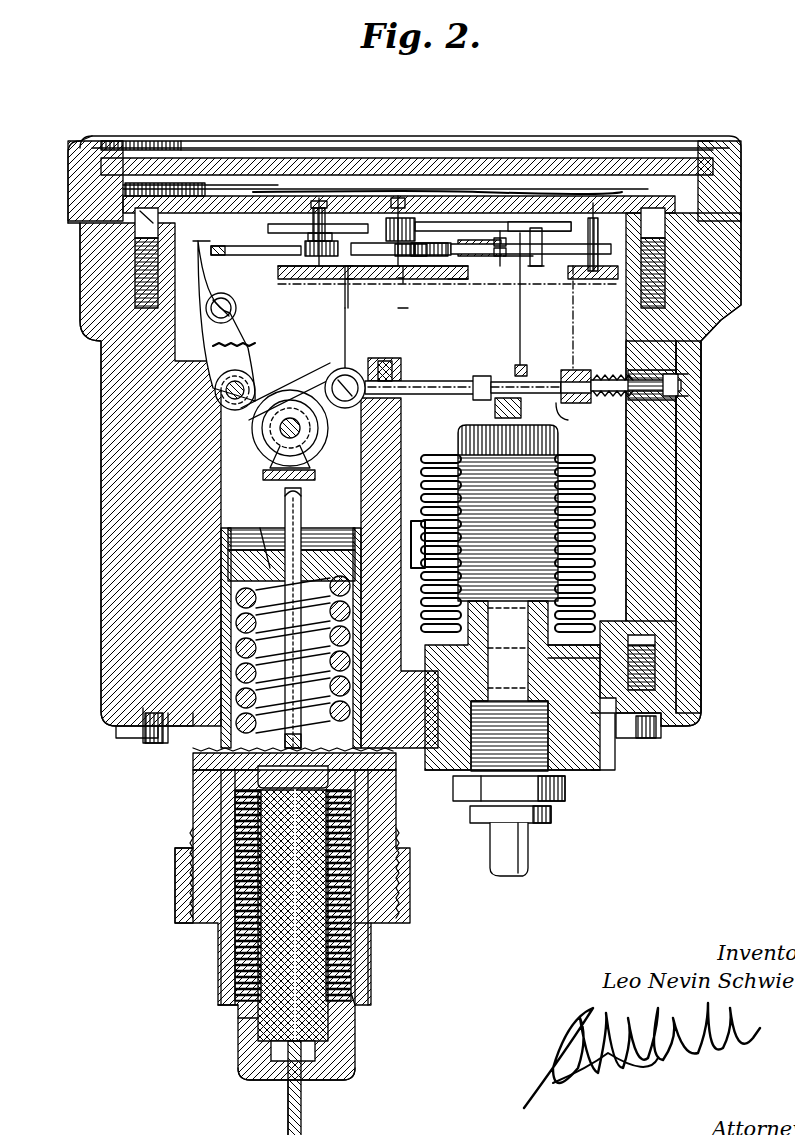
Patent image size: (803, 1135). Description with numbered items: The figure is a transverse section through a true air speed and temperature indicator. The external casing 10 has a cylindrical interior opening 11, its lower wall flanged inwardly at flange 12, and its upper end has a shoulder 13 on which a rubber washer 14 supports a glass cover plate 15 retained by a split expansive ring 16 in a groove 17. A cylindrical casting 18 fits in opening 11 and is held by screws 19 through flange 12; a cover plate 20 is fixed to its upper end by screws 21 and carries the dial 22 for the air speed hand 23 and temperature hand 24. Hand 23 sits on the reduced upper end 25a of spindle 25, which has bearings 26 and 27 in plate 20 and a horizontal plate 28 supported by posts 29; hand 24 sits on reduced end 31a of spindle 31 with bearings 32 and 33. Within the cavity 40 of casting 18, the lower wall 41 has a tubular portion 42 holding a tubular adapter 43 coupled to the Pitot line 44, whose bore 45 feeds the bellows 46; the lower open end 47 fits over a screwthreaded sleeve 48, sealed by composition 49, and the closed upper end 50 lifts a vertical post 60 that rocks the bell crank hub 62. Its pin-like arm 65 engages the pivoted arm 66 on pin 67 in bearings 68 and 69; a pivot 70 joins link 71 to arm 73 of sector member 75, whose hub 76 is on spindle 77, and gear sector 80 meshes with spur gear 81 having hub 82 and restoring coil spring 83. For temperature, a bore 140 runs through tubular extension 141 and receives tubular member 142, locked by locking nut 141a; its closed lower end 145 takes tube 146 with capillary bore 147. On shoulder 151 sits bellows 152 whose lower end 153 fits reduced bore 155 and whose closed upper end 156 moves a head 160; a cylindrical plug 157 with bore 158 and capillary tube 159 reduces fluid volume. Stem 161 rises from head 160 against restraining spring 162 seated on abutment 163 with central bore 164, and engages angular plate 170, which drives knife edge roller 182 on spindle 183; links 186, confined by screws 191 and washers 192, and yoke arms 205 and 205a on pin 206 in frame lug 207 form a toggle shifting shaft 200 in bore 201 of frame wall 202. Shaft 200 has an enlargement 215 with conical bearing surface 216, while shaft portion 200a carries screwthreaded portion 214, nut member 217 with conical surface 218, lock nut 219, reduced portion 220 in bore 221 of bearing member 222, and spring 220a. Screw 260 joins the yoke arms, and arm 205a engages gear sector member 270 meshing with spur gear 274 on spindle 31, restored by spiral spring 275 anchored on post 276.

The external casing 10 is at (718, 298).
The cylindrical interior opening 11 is at (682, 452).
The casing flange 12 is at (128, 732).
The shoulder 13 is at (95, 187).
The rubber washer 14 is at (97, 170).
The glass cover plate 15 is at (140, 150).
The split expansive ring 16 is at (170, 142).
The groove 17 is at (118, 135).
The casting 18 is at (143, 453).
The screws 19 is at (140, 736).
The cover plate 20 is at (210, 195).
The screws 21 is at (135, 255).
The dial 22 is at (235, 180).
The air speed indicator hand 23 is at (475, 200).
The temperature indicator hand 24 is at (305, 215).
The spindle 25 is at (385, 212).
The reduced upper end of spindle 25a is at (388, 205).
The bearing 26 is at (416, 242).
The bearing 27 is at (392, 268).
The horizontal plate 28 is at (450, 272).
The posts 29 is at (262, 222).
The spindle 31 is at (316, 245).
The reduced upper end of spindle 31a is at (320, 235).
The bearing 32 is at (322, 205).
The bearing 33 is at (292, 271).
The cavity 40 is at (640, 512).
The lower wall 41 is at (592, 700).
The tubular portion 42 is at (573, 762).
The tubular adapter 43 is at (598, 720).
The line 44 is at (520, 850).
The bore 45 is at (425, 742).
The bellows 46 is at (586, 522).
The lower open end of bellows 47 is at (550, 637).
The internally screwthreaded sleeve 48 is at (558, 652).
The sealing composition 49 is at (635, 662).
The closed upper end of bellows 50 is at (455, 430).
The vertical post 60 is at (495, 405).
The bell crank hub 62 is at (510, 345).
The pin-like arm 65 is at (514, 329).
The pivoted arm 66 is at (530, 262).
The pin 67 is at (530, 272).
The bearing 68 is at (586, 230).
The bearing 69 is at (562, 300).
The pivotal connection 70 is at (490, 235).
The link 71 is at (492, 245).
The arm 73 is at (494, 240).
The sector member 75 is at (465, 236).
The hub 76 is at (530, 240).
The vertical spindle 77 is at (505, 272).
The gear sector 80 is at (400, 235).
The spur gear 81 is at (406, 242).
The hub 82 is at (395, 272).
The restoring coil spring 83 is at (396, 300).
The vertical bore 140 is at (240, 616).
The tubular extension 141 is at (185, 810).
The locking nut 141a is at (170, 880).
The tubular member 142 is at (215, 930).
The closed lower end 145 is at (255, 1074).
The tube 146 is at (300, 1070).
The capillary bore 147 is at (280, 1088).
The shoulder 151 is at (346, 990).
The bellows 152 is at (350, 944).
The lower end portion of bellows 153 is at (228, 1000).
The reduced bore 155 is at (250, 1020).
The closed upper end of bellows 156 is at (250, 768).
The cylindrical plug 157 is at (240, 965).
The bore 158 is at (300, 1045).
The capillary tube 159 is at (290, 1000).
The head 160 is at (230, 753).
The stem 161 is at (282, 490).
The restraining spring 162 is at (230, 742).
The abutment 163 is at (252, 555).
The central bore 164 is at (280, 558).
The angular pivoted plate 170 is at (265, 468).
The knife edge roller 182 is at (260, 440).
The spindle 183 is at (258, 430).
The links 186 is at (318, 385).
The screws 191 is at (337, 367).
The washers 192 is at (340, 302).
The shaft 200 is at (405, 375).
The shaft portion 200a is at (534, 375).
The bore 201 is at (343, 290).
The frame wall 202 is at (388, 385).
The yoke arm 205 is at (215, 385).
The yoke arm 205a is at (238, 375).
The pin 206 is at (250, 372).
The frame lug 207 is at (215, 330).
The screwthreaded portion 214 is at (565, 398).
The enlargement 215 is at (478, 374).
The conical bearing surface 216 is at (470, 368).
The nut member 217 is at (565, 374).
The conical surface 218 is at (560, 362).
The lock nut 219 is at (575, 395).
The reduced shaft portion 220 is at (662, 390).
The spring 220a is at (675, 390).
The bore 221 is at (672, 378).
The bearing member 222 is at (670, 368).
The screw 260 is at (228, 305).
The gear sector member 270 is at (228, 246).
The spur gear 274 is at (312, 271).
The spiral restoring spring 275 is at (342, 266).
The post 276 is at (342, 272).